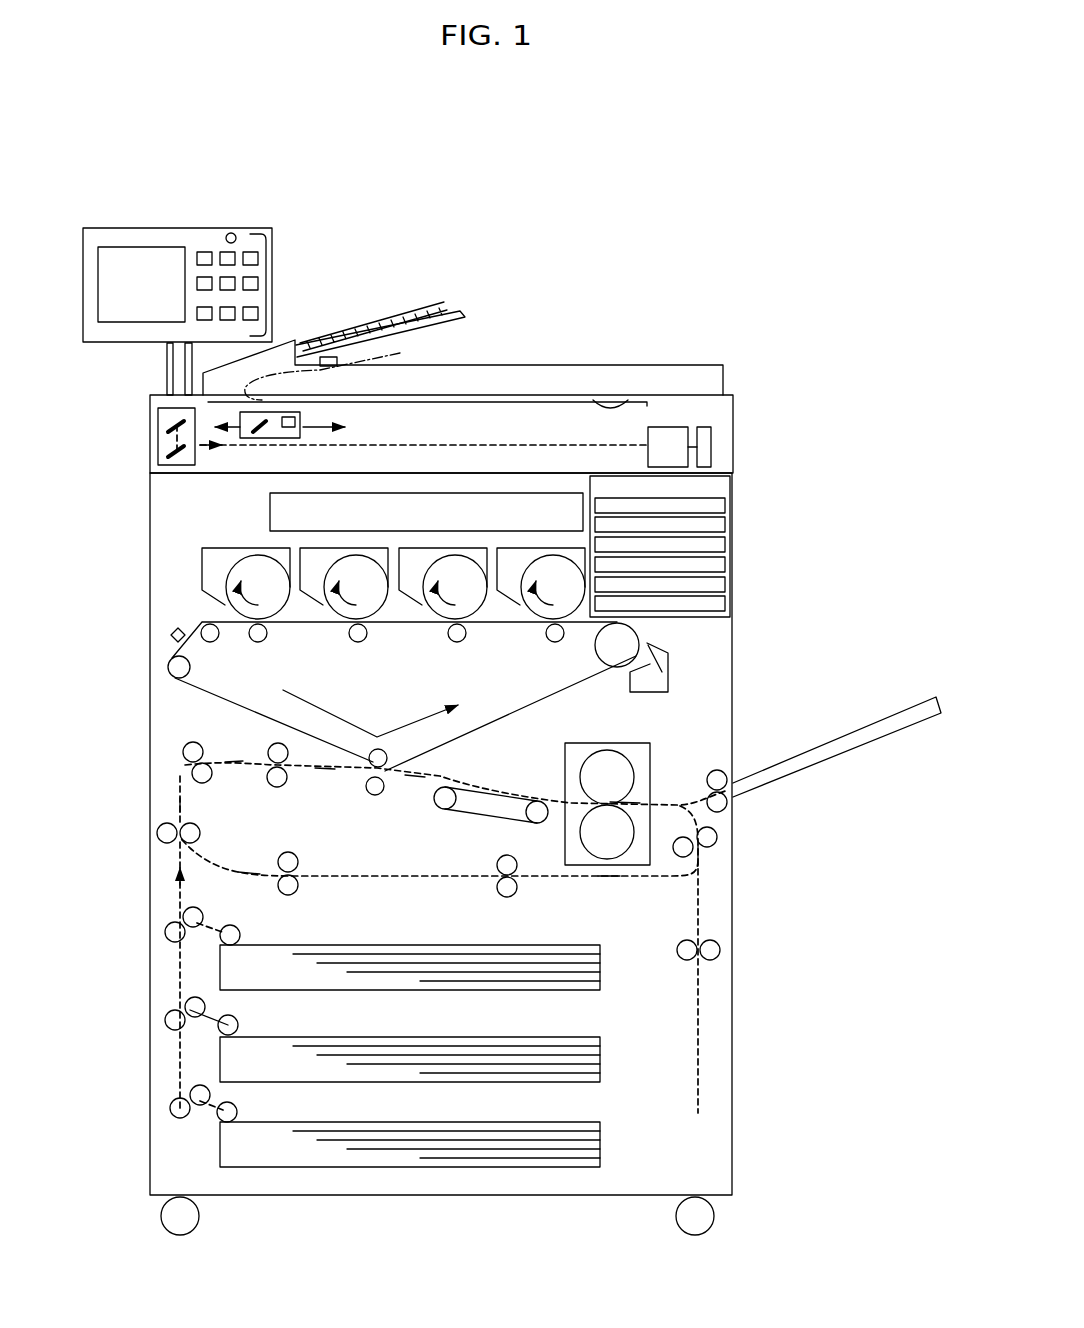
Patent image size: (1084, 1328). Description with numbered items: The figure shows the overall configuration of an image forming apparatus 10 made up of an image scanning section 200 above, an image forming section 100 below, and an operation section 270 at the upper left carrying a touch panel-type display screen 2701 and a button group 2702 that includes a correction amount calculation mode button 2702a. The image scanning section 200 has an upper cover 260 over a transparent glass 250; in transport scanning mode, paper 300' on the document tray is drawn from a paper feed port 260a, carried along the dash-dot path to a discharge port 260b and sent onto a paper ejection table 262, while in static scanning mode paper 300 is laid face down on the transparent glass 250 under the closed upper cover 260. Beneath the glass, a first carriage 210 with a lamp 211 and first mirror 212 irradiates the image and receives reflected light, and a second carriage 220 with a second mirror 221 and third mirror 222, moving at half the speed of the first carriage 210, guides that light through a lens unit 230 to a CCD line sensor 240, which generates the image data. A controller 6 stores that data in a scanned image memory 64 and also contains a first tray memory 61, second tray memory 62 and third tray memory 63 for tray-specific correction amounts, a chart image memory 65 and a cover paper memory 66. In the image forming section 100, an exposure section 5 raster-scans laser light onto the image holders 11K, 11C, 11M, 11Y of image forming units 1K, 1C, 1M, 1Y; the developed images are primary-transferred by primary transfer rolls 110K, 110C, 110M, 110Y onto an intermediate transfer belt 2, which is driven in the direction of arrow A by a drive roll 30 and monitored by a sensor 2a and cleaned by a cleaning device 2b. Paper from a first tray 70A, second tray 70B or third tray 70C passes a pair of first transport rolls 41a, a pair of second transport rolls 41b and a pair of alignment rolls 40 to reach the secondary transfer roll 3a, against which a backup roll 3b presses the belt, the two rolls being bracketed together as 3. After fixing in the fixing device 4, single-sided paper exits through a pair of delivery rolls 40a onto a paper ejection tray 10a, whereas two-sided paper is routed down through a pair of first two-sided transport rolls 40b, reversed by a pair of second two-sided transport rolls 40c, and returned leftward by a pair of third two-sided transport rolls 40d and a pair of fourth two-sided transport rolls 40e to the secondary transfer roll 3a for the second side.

The image forming apparatus 10 is at (408, 198).
The image forming section 100 is at (840, 562).
The image scanning section 200 is at (762, 430).
The operation section 270 is at (192, 212).
The display screen 2701 is at (118, 244).
The button group 2702 is at (268, 283).
The correction amount calculation mode button 2702a is at (236, 236).
The upper cover 260 is at (463, 313).
The paper feed port 260a is at (312, 332).
The discharge port 260b is at (380, 358).
The document 300' is at (408, 296).
The paper 300 is at (561, 319).
The paper ejection table 262 is at (596, 400).
The transparent glass 250 is at (660, 427).
The lens unit 230 is at (700, 427).
The CCD line sensor 240 is at (735, 410).
The second carriage 220 is at (152, 440).
The second mirror 221 is at (172, 420).
The third mirror 222 is at (170, 451).
The first carriage 210 is at (312, 418).
The lamp 211 is at (300, 437).
The first mirror 212 is at (260, 440).
The controller 6 is at (731, 478).
The first tray memory 61 is at (726, 505).
The second tray memory 62 is at (726, 525).
The third tray memory 63 is at (726, 545).
The scanned image memory 64 is at (726, 565).
The chart image memory 65 is at (726, 585).
The cover paper memory 66 is at (726, 604).
The exposure section 5 is at (270, 512).
The image forming unit 1K is at (205, 607).
The image forming unit 1C is at (312, 612).
The image forming unit 1M is at (410, 612).
The image forming unit 1Y is at (512, 612).
The intermediate transfer belt 2 is at (590, 690).
The sensor 2a is at (170, 635).
The cleaning device 2b is at (700, 657).
The drive roll 30 is at (624, 636).
The image holder 11K is at (238, 618).
The primary transfer roll 110K is at (260, 645).
The primary transfer roll 110C is at (356, 643).
The image holder 11C is at (340, 618).
The primary transfer roll 110M is at (457, 643).
The image holder 11M is at (437, 618).
The primary transfer roll 110Y is at (555, 643).
The image holder 11Y is at (535, 618).
The pair of alignment rolls 40 is at (252, 750).
The pair of first transport rolls 41a is at (162, 813).
The pair of second transport rolls 41b is at (177, 768).
The secondary transfer unit 3 is at (306, 791).
The secondary transfer roll 3a is at (372, 795).
The backup roll 3b is at (370, 765).
The fixing device 4 is at (668, 770).
The pair of delivery rolls 40a is at (740, 795).
The pair of first two-sided transport rolls 40b is at (708, 866).
The pair of second two-sided transport rolls 40c is at (706, 958).
The pair of third two-sided transport rolls 40d is at (528, 885).
The pair of fourth two-sided transport rolls 40e is at (302, 878).
The paper ejection tray 10a is at (842, 758).
The first tray 70A is at (220, 957).
The second tray 70B is at (220, 1050).
The third tray 70C is at (220, 1137).